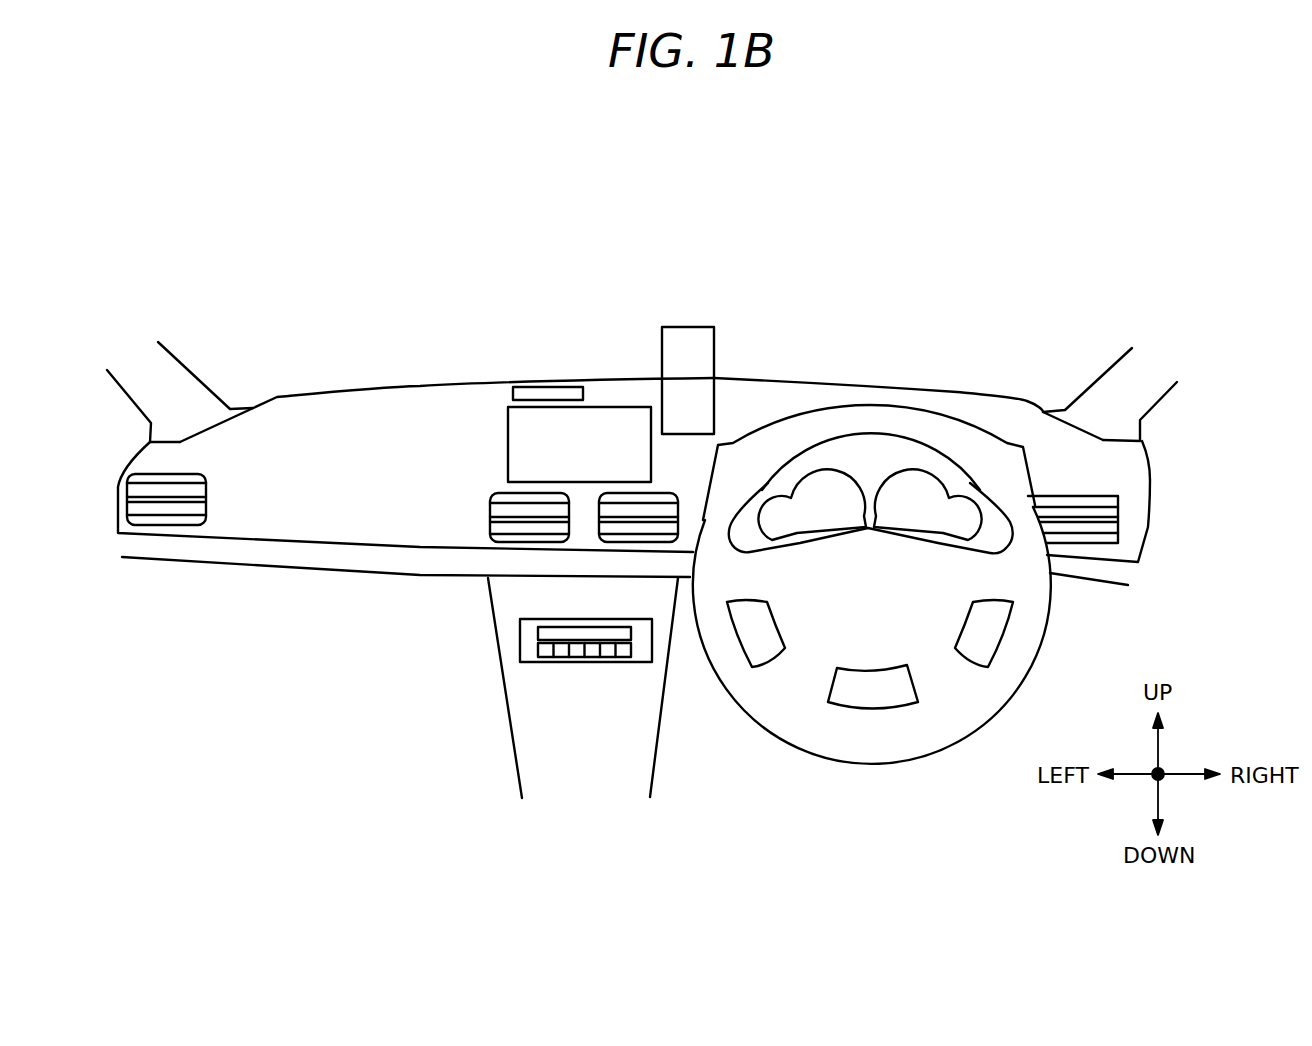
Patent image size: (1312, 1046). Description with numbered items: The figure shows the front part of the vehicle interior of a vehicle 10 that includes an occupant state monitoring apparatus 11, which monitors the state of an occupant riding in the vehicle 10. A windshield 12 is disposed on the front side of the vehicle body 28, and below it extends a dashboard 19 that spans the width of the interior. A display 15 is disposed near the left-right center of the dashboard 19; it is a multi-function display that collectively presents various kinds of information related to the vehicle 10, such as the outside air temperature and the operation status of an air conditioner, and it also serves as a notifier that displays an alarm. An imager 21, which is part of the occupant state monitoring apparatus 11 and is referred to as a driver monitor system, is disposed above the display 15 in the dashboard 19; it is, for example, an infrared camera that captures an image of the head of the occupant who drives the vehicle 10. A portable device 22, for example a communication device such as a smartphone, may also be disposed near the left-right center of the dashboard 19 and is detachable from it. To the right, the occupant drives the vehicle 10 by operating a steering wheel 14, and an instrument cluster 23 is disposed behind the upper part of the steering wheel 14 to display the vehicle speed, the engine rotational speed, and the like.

The vehicle 10 is at (830, 193).
The occupant state monitoring apparatus 11 is at (398, 270).
The windshield 12 is at (345, 317).
The steering wheel 14 is at (865, 760).
The display 15 is at (628, 407).
The dashboard 19 is at (957, 392).
The imager 21 is at (537, 387).
The portable device 22 is at (680, 327).
The instrument cluster 23 is at (826, 463).
The vehicle body 28 is at (600, 210).